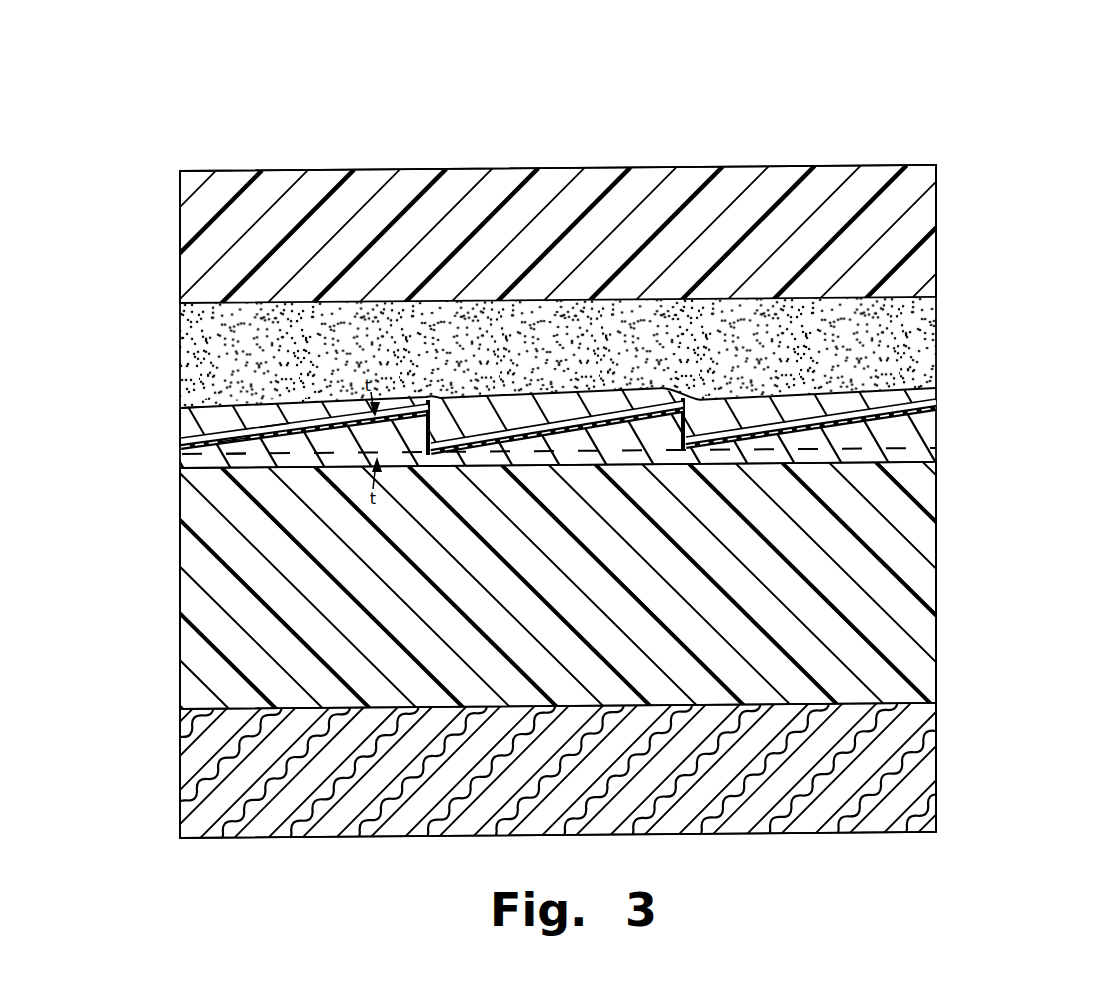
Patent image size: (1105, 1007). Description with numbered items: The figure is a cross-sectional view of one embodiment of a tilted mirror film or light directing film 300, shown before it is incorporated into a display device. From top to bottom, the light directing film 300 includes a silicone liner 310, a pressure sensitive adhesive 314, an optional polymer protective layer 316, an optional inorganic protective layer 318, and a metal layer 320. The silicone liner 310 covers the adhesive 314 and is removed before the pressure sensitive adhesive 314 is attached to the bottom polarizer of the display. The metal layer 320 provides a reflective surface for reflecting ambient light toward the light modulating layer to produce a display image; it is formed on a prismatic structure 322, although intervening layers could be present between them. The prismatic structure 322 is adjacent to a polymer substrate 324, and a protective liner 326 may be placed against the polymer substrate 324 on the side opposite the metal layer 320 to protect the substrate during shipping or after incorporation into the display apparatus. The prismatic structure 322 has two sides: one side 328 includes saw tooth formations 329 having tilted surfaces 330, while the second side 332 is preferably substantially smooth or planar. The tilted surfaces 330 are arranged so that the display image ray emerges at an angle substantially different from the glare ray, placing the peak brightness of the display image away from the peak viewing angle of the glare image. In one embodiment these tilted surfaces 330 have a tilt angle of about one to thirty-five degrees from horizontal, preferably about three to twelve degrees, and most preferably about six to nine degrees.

The light directing film 300 is at (1024, 146).
The silicone liner 310 is at (920, 219).
The pressure sensitive adhesive 314 is at (905, 341).
The polymer protective layer 316 is at (757, 400).
The inorganic protective layer 318 is at (906, 407).
The metal layer 320 is at (908, 412).
The prismatic structure 322 is at (918, 437).
The polymer substrate 324 is at (905, 608).
The protective liner 326 is at (912, 777).
The side 328 is at (182, 430).
The saw tooth formations 329 is at (275, 428).
The tilted surfaces 330 is at (235, 428).
The second side 332 is at (245, 462).